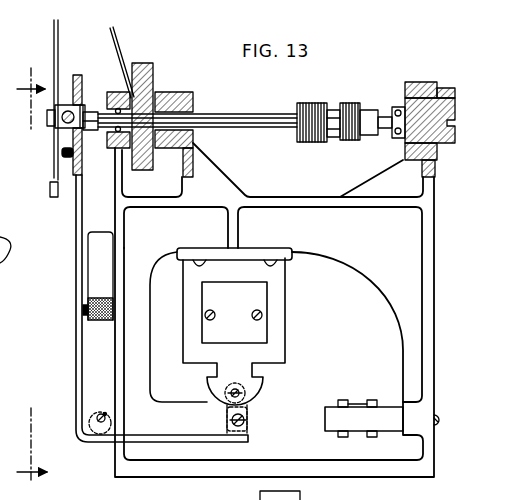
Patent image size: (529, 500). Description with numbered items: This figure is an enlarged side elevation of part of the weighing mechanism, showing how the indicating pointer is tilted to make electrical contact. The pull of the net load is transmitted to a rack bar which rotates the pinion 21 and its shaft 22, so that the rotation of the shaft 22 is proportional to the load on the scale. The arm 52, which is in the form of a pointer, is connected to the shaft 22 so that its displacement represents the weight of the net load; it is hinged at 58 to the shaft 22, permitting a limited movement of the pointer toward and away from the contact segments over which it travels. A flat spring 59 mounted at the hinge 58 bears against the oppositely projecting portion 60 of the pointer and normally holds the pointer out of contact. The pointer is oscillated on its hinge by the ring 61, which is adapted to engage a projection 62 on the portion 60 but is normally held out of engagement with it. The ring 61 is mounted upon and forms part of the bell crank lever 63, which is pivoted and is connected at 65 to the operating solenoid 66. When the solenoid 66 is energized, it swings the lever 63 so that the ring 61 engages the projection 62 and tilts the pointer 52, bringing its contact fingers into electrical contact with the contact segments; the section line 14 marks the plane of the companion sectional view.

The section line 14- 14 is at (22, 85).
The pinion 21 is at (345, 105).
The shaft 22 is at (243, 115).
The arm 52 is at (60, 43).
The hinge 58 is at (52, 117).
The flat spring 59 is at (50, 162).
The oppositely projecting portion 60 is at (58, 197).
The ring 61 is at (80, 78).
The projection 62 is at (79, 152).
The bell crank lever 63 is at (77, 380).
The connection to solenoid 65 is at (248, 420).
The operating solenoid 66 is at (284, 364).